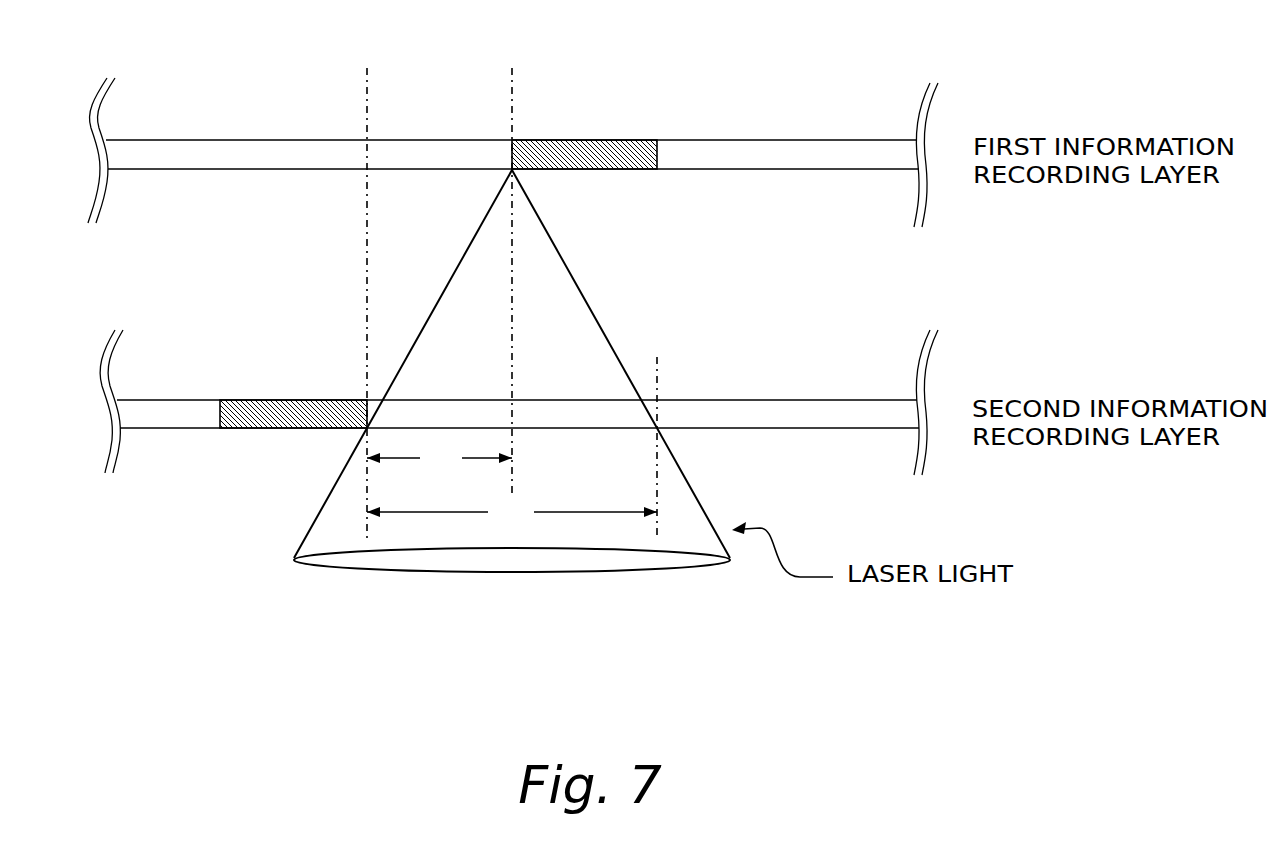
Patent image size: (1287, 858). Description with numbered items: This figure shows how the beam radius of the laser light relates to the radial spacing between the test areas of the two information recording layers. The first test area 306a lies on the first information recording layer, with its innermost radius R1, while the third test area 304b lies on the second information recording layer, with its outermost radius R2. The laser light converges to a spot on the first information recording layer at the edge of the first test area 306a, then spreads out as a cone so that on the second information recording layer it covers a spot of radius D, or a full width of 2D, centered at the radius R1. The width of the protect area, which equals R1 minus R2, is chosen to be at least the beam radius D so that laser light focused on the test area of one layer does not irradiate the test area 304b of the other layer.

The first test area 306a is at (587, 150).
The third test area 304b is at (265, 417).
The innermost radius of the first test area R1 is at (511, 265).
The outermost radius of the third test area R2 is at (372, 290).
The beam radius of laser light D is at (439, 459).
The beam diameter of laser light 2D is at (512, 514).